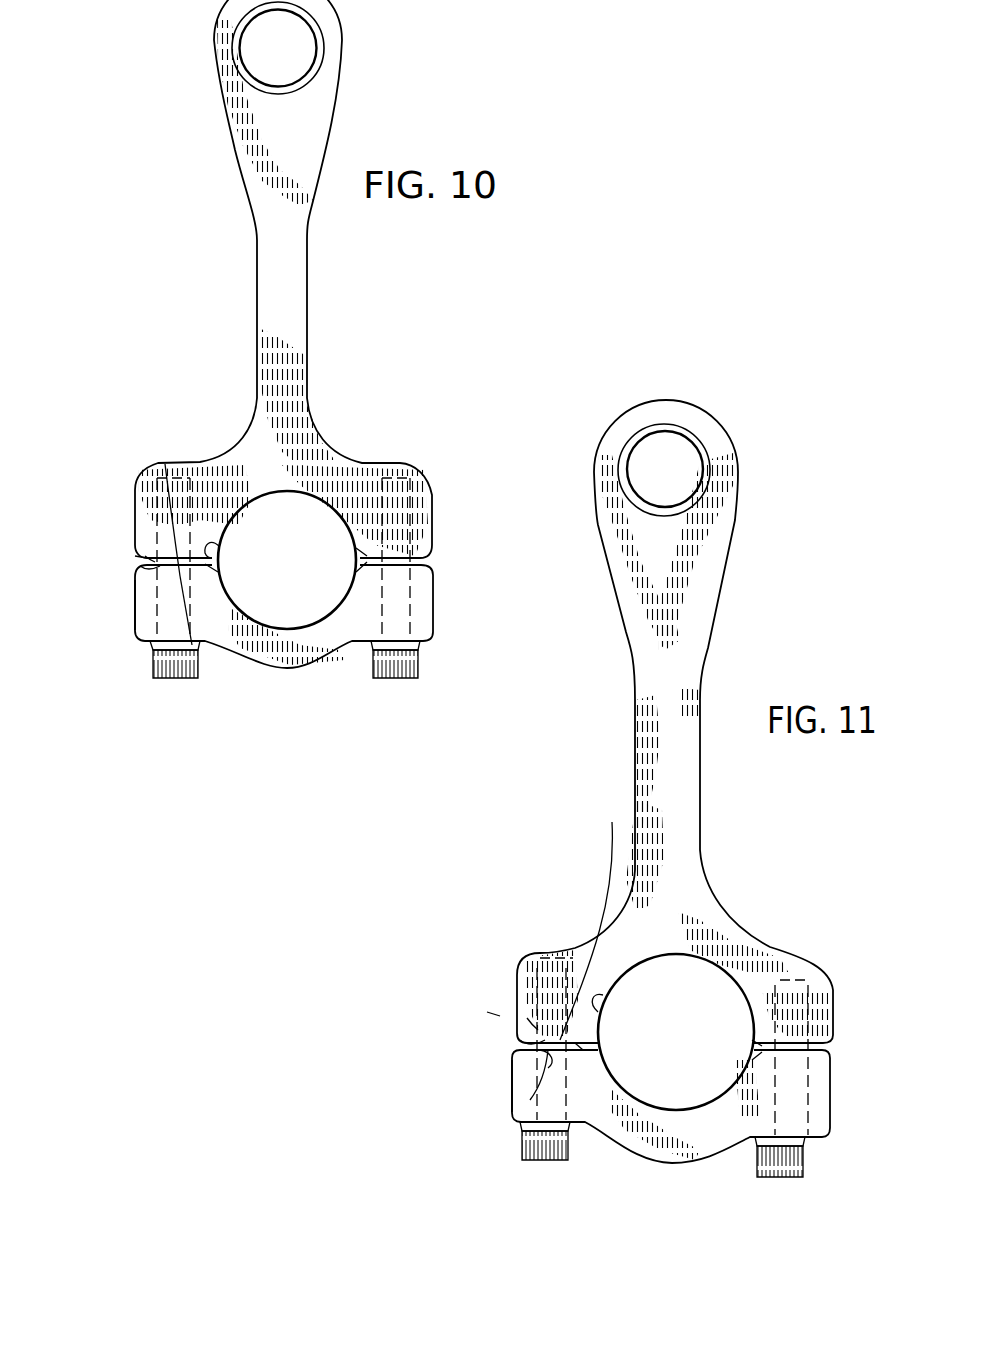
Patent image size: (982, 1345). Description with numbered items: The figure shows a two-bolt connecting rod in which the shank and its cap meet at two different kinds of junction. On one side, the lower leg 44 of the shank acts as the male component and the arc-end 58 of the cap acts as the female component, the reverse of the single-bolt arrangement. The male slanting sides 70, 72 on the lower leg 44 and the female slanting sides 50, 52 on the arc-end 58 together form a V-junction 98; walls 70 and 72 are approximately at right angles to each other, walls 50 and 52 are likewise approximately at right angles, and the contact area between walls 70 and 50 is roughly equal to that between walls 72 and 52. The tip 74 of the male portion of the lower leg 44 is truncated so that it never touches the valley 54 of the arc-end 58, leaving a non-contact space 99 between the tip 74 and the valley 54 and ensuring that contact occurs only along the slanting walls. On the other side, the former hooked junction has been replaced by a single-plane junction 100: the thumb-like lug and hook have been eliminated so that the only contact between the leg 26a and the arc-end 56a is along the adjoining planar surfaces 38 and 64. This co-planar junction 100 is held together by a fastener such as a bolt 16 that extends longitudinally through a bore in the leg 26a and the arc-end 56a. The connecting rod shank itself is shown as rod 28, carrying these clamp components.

In FIG. 10, the bolt 16 is at (165, 658).
In FIG. 11, the bolt 16 is at (532, 1143).
In FIG. 10, the leg 26a is at (395, 447).
In FIG. 11, the leg 26a is at (795, 960).
In FIG. 10, the connecting rod 28 is at (190, 446).
In FIG. 11, the connecting rod 28 is at (592, 912).
In FIG. 10, the surface 38 is at (364, 556).
In FIG. 11, the surface 38 is at (784, 1040).
In FIG. 10, the lower leg 44 is at (148, 500).
In FIG. 11, the lower leg 44 is at (522, 986).
In FIG. 10, the female slanting side 50 is at (148, 572).
In FIG. 11, the female slanting side 50 is at (526, 1035).
In FIG. 10, the female slanting side 52 is at (198, 571).
In FIG. 11, the female slanting side 52 is at (573, 1050).
In FIG. 10, the valley 54 is at (178, 665).
In FIG. 11, the valley 54 is at (541, 1050).
In FIG. 10, the arc-end 56a is at (438, 613).
In FIG. 11, the arc-end 56a is at (836, 1095).
In FIG. 10, the arc-end 58 is at (126, 604).
In FIG. 11, the arc-end 58 is at (526, 1072).
In FIG. 10, the surface 64 is at (372, 566).
In FIG. 11, the surface 64 is at (773, 1051).
In FIG. 10, the male slanting side 70 is at (145, 553).
In FIG. 11, the male slanting side 70 is at (527, 1017).
In FIG. 10, the male slanting side 72 is at (204, 548).
In FIG. 11, the male slanting side 72 is at (604, 996).
In FIG. 10, the tip 74 is at (150, 556).
In FIG. 11, the tip 74 is at (593, 916).
In FIG. 10, the V-junction 98 is at (118, 552).
In FIG. 11, the V-junction 98 is at (488, 1013).
In FIG. 10, the non-contact space 99 is at (180, 578).
In FIG. 11, the non-contact space 99 is at (548, 1050).
In FIG. 10, the single-plane junction 100 is at (437, 559).
In FIG. 11, the single-plane junction 100 is at (839, 1045).